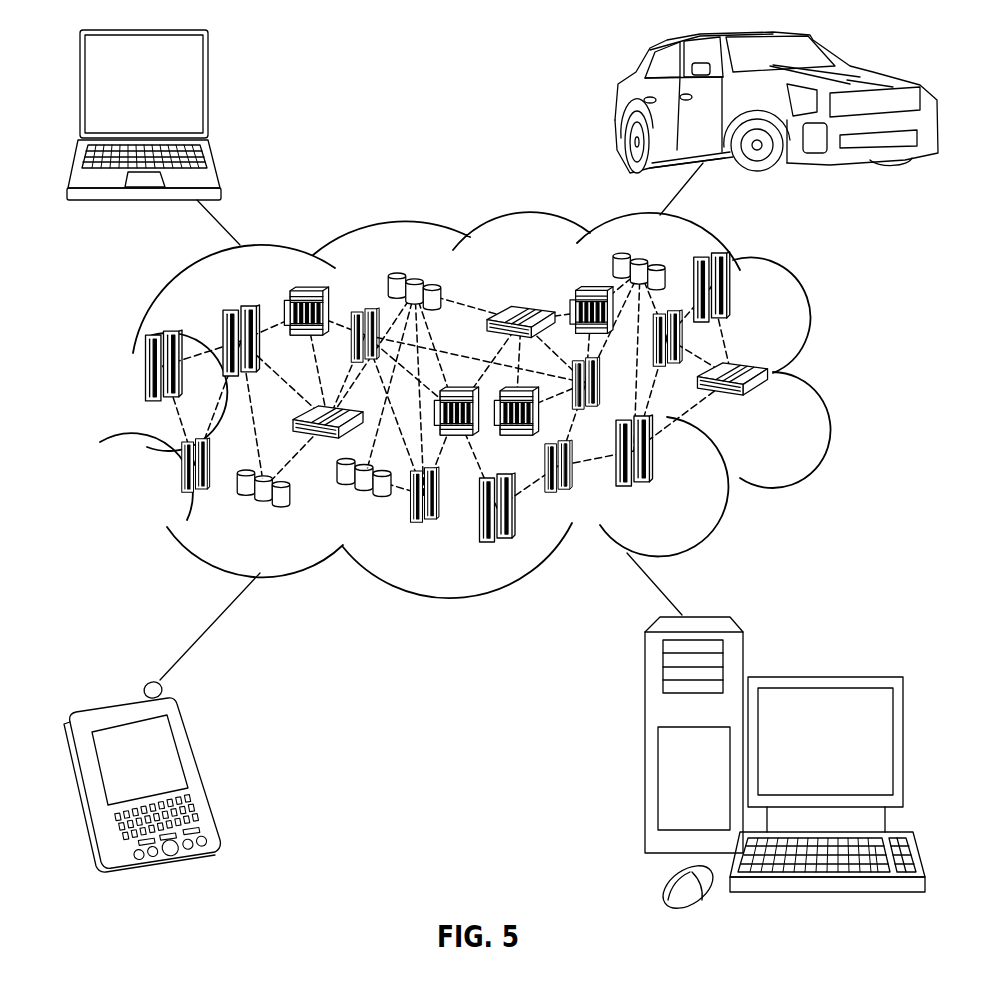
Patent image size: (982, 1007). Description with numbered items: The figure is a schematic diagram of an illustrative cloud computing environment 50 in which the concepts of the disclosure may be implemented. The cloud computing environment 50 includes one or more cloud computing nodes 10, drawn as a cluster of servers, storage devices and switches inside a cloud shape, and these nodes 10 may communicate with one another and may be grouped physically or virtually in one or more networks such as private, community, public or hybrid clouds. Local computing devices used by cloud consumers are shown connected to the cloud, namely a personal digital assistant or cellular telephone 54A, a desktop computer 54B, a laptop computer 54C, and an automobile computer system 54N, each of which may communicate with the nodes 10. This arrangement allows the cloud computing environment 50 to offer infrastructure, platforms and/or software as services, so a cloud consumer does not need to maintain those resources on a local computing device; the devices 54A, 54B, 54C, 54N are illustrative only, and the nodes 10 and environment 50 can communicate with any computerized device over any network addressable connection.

The cloud computing node 10 is at (778, 413).
The cloud computing environment 50 is at (823, 377).
The personal digital assistant or cellular telephone 54A is at (200, 773).
The desktop computer 54B is at (822, 677).
The laptop computer 54C is at (208, 92).
The automobile computer system 54N is at (618, 107).